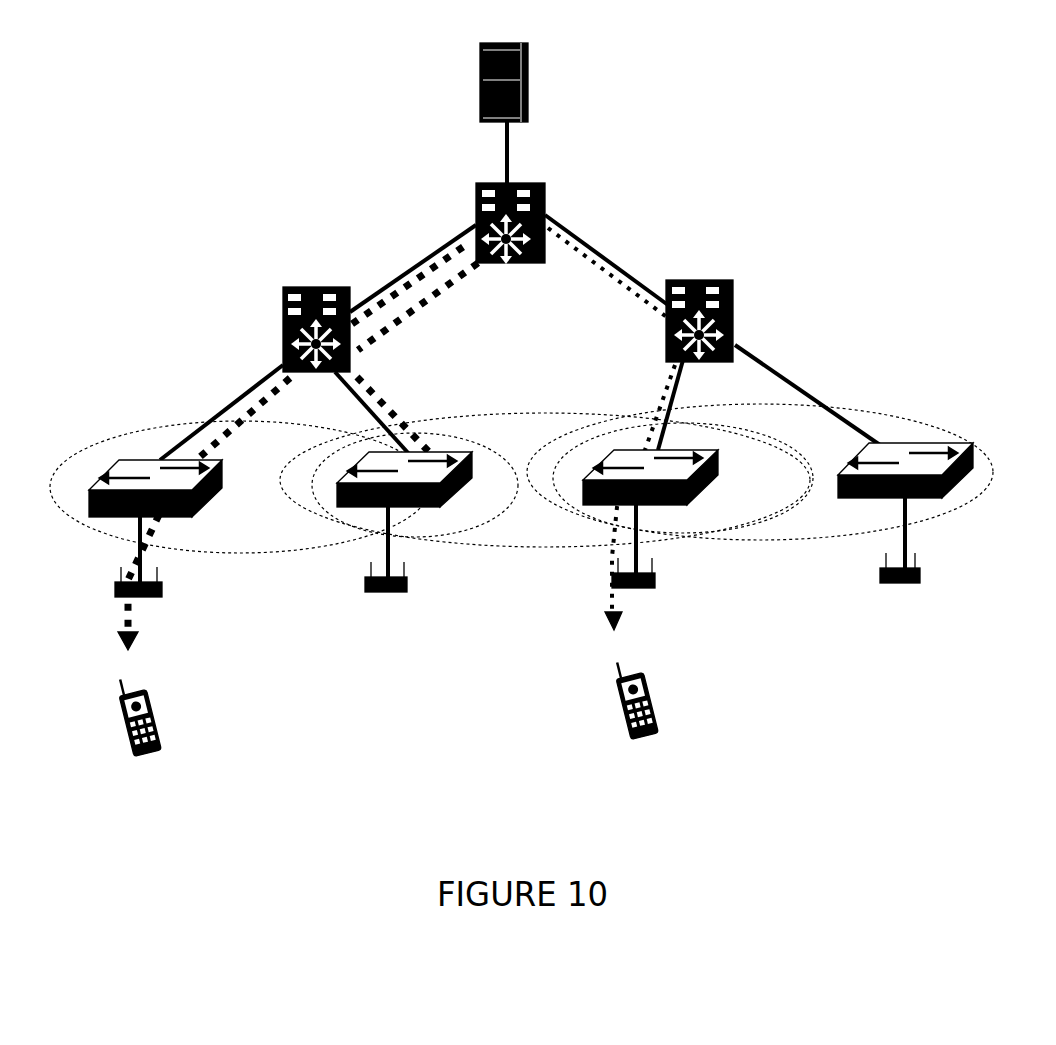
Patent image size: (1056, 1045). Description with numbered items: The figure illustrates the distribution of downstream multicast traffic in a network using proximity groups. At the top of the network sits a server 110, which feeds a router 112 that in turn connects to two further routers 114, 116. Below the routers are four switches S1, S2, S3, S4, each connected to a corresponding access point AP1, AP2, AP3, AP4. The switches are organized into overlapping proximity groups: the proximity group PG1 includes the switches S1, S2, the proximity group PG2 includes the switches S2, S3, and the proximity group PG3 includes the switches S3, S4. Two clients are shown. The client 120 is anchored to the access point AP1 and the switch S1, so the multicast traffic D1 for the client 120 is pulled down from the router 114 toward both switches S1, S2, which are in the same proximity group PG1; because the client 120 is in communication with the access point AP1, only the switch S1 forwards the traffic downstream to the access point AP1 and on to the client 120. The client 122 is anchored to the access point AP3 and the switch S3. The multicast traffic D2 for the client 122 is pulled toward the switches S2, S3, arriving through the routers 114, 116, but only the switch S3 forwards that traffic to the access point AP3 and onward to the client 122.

The server 110 is at (523, 43).
The router 112 is at (532, 185).
The router 114 is at (290, 290).
The router 116 is at (690, 282).
The client 120 is at (124, 718).
The client 122 is at (618, 698).
The switch S1 is at (222, 472).
The switch S2 is at (355, 462).
The switch S3 is at (716, 464).
The switch S4 is at (866, 500).
The access point AP1 is at (115, 589).
The access point AP2 is at (410, 585).
The access point AP3 is at (656, 583).
The access point AP4 is at (922, 572).
The proximity group PG1 is at (116, 434).
The proximity group PG2 is at (546, 411).
The proximity group PG3 is at (908, 414).
The multicast traffic D1 is at (334, 388).
The multicast traffic D2 is at (374, 393).